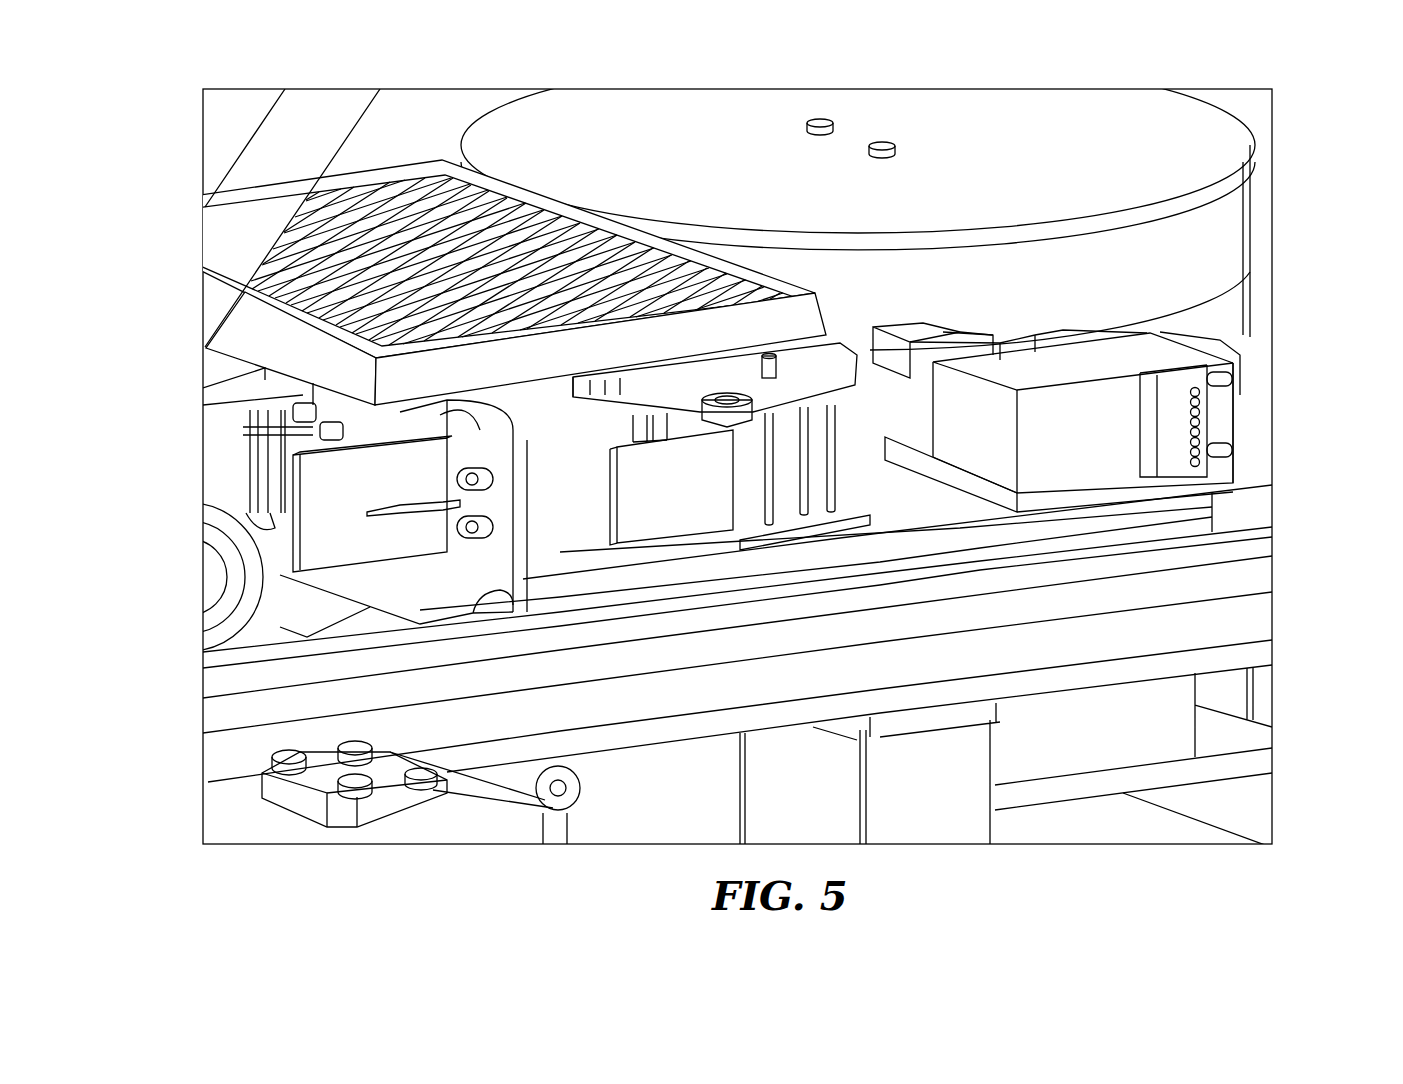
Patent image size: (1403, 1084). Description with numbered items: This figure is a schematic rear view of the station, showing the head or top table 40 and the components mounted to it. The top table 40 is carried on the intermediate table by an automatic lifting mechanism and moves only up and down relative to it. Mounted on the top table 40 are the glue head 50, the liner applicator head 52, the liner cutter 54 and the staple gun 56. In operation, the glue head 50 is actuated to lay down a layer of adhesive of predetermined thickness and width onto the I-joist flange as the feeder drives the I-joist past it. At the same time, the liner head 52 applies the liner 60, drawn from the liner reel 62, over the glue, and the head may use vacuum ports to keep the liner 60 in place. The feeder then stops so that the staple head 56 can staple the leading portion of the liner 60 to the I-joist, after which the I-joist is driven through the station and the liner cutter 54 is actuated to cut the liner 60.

The head or top table 40 is at (883, 420).
The glue head 50 is at (1237, 428).
The liner applicator head 52 is at (728, 430).
The liner cutter 54 is at (620, 430).
The staple gun 56 is at (492, 447).
The liner 60 is at (669, 514).
The liner reel 62 is at (792, 180).